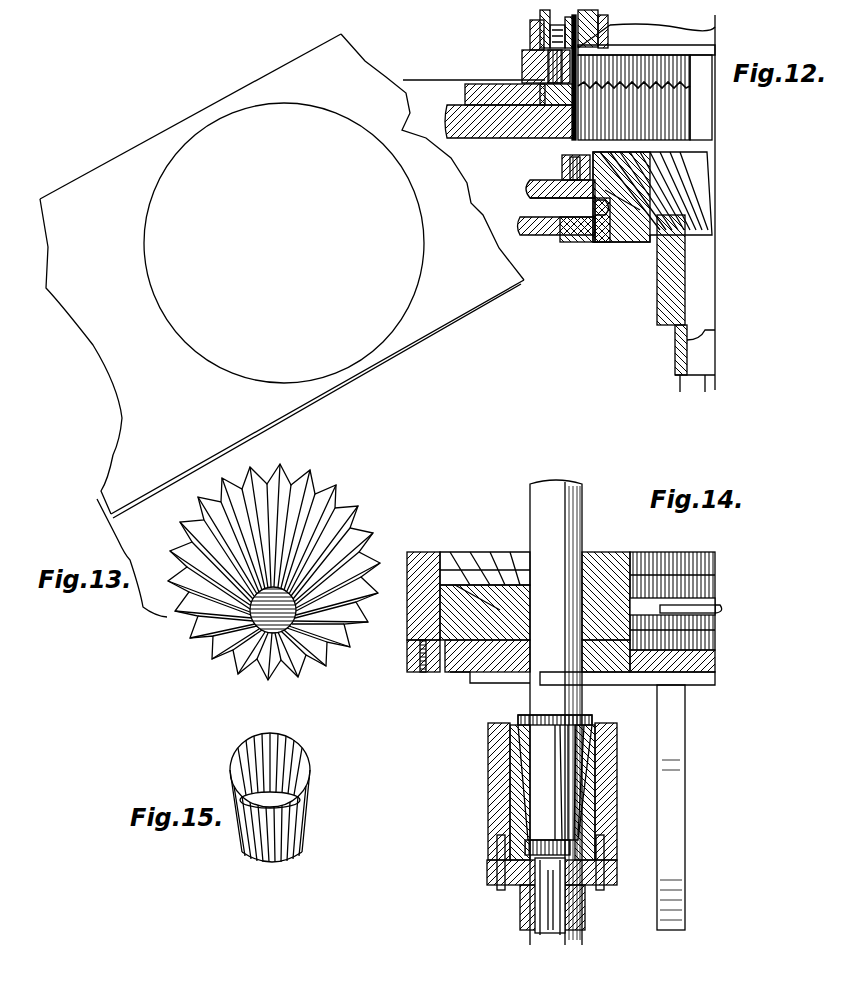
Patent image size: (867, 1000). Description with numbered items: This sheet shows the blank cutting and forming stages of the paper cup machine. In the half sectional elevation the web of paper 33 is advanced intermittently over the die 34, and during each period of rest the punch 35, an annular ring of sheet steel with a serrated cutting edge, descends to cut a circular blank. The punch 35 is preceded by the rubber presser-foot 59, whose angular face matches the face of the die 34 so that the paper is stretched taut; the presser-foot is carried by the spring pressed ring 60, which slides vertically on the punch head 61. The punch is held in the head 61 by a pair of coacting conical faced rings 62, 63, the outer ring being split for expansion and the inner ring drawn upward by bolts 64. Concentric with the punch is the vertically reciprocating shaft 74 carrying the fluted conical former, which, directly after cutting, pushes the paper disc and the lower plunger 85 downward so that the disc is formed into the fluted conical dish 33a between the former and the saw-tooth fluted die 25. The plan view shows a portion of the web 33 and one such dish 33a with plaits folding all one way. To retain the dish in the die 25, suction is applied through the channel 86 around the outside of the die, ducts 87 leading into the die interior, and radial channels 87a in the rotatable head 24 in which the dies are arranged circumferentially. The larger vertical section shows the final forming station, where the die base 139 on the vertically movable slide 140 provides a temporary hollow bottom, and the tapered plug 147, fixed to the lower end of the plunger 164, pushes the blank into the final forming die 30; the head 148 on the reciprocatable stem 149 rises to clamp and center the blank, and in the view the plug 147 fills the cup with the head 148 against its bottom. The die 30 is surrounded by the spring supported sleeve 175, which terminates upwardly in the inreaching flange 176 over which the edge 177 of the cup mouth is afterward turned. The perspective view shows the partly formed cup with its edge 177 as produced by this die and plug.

In FIG. 12, the web of paper 33 is at (455, 80).
In FIG. 13, the web of paper 33 is at (282, 325).
In FIG. 12, the fluted conical dish 33a is at (700, 172).
In FIG. 13, the fluted conical dish 33a is at (318, 485).
In FIG. 12, the die 34 is at (545, 128).
In FIG. 12, the punch 35 is at (690, 94).
In FIG. 12, the presser-foot 59 is at (525, 72).
In FIG. 12, the spring pressed ring 60 is at (532, 40).
In FIG. 12, the punch head 61 is at (540, 11).
In FIG. 12, the conical faced ring 62 is at (598, 20).
In FIG. 12, the conical faced ring 63 is at (608, 28).
In FIG. 12, the bolt 64 is at (640, 50).
In FIG. 12, the shaft 74 is at (705, 130).
In FIG. 12, the lower plunger 85 is at (700, 280).
In FIG. 12, the channel 86 is at (578, 242).
In FIG. 14, the channel 86 is at (420, 640).
In FIG. 12, the duct 87 is at (608, 240).
In FIG. 14, the duct 87 is at (448, 575).
In FIG. 12, the radial channel 87a is at (545, 188).
In FIG. 14, the radial channel 87a is at (718, 612).
In FIG. 12, the head 24 is at (530, 226).
In FIG. 14, the head 24 is at (715, 598).
In FIG. 12, the fluted die 25 is at (645, 215).
In FIG. 14, the fluted die 25 is at (458, 600).
In FIG. 14, the plunger 164 is at (580, 503).
In FIG. 14, the die base 139 is at (588, 675).
In FIG. 14, the slide 140 is at (685, 755).
In FIG. 14, the inreaching flange 176 is at (518, 720).
In FIG. 14, the tapered plug 147 is at (492, 750).
In FIG. 14, the final forming die 30 is at (490, 815).
In FIG. 14, the sleeve 175 is at (610, 835).
In FIG. 14, the head 148 is at (540, 840).
In FIG. 14, the stem 149 is at (553, 932).
In FIG. 15, the edge of the cup mouth 177 is at (296, 742).